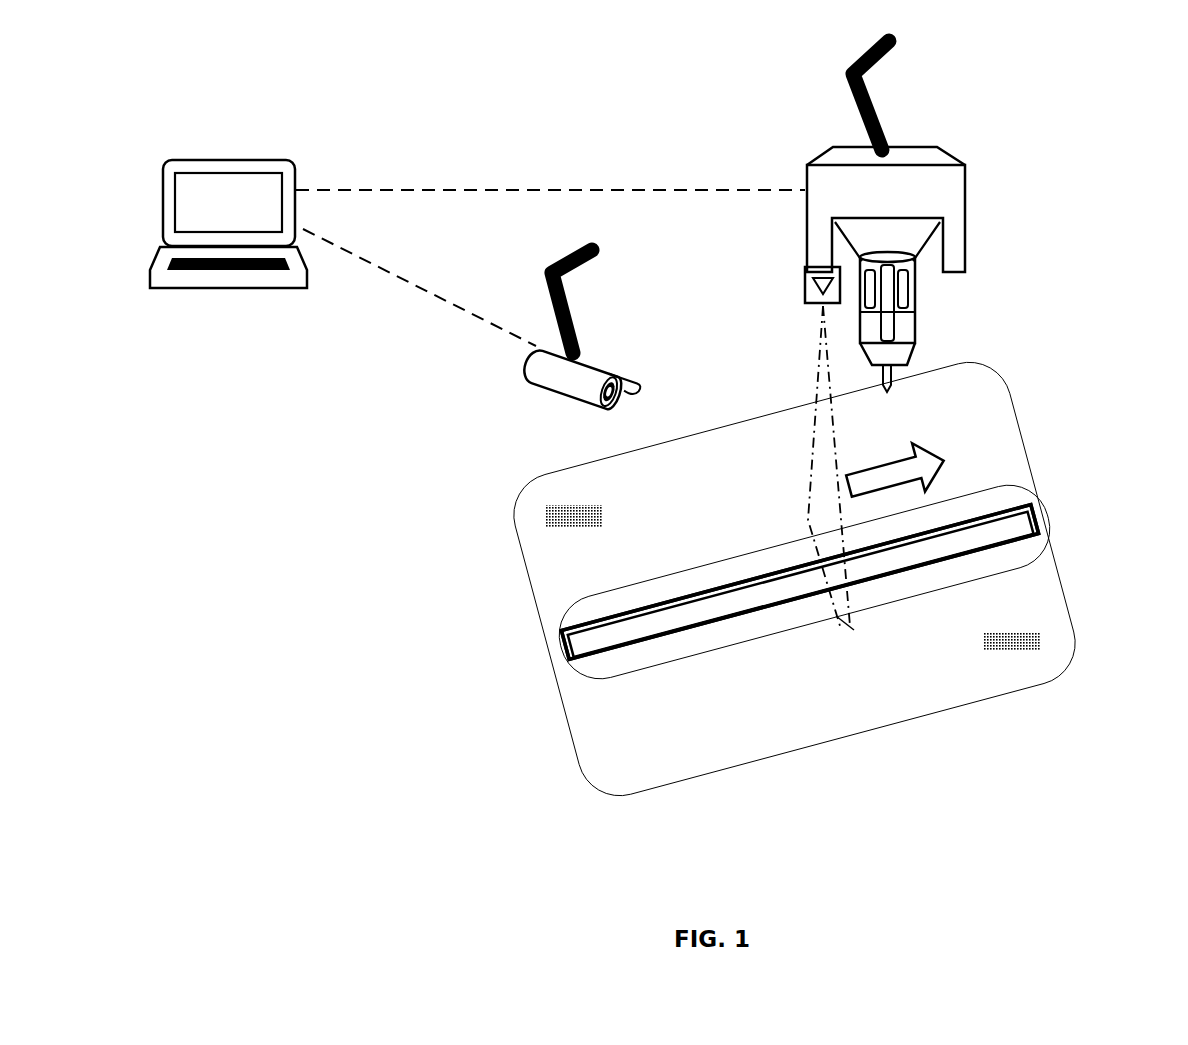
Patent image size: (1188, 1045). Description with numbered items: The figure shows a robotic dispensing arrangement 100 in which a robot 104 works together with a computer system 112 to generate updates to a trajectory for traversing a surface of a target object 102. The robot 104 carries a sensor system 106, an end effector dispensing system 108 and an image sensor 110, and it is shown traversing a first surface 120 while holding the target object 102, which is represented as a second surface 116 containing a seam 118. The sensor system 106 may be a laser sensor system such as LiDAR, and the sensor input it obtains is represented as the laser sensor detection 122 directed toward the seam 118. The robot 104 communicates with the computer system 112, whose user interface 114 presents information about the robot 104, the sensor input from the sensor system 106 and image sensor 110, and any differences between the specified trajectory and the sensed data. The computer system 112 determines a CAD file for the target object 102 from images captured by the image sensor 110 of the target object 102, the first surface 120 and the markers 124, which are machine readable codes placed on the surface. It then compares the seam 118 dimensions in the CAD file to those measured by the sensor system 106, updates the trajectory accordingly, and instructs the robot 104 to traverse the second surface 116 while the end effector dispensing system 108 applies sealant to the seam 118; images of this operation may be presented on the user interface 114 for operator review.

The robotic dispensing system 100 is at (208, 70).
The target object 102 is at (799, 582).
The robot 104 is at (982, 218).
The sensor system 106 is at (798, 285).
The end effector dispensing system 108 is at (928, 289).
The image sensor 110 is at (522, 384).
The computer system 112 is at (228, 256).
The user interface 114 is at (228, 202).
The second surface 116 is at (1058, 529).
The seam 118 is at (554, 655).
The first surface 120 is at (584, 787).
The laser sensor detection 122 is at (833, 633).
The markers 124 is at (539, 519).